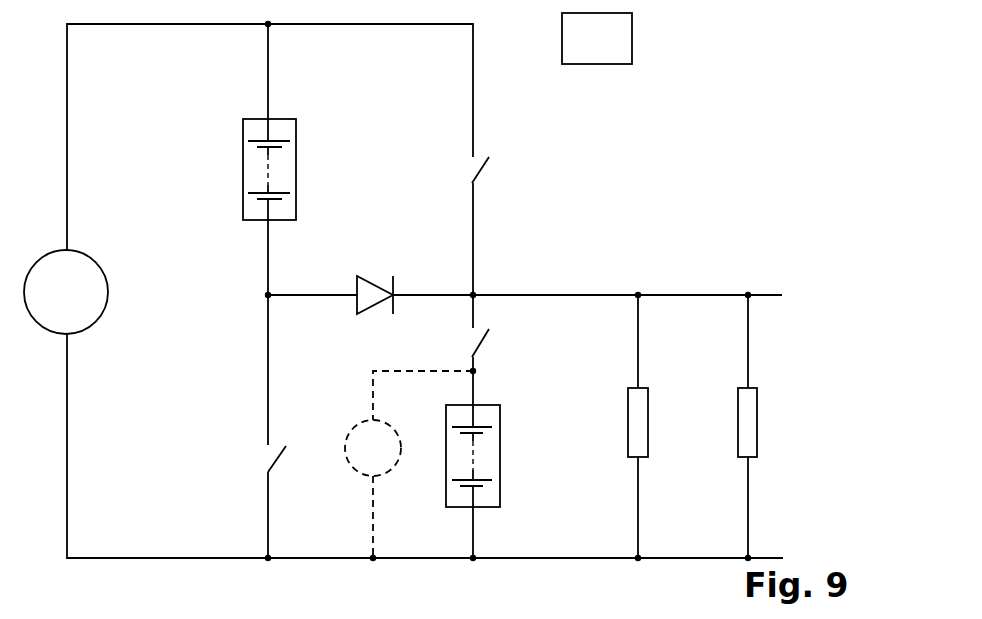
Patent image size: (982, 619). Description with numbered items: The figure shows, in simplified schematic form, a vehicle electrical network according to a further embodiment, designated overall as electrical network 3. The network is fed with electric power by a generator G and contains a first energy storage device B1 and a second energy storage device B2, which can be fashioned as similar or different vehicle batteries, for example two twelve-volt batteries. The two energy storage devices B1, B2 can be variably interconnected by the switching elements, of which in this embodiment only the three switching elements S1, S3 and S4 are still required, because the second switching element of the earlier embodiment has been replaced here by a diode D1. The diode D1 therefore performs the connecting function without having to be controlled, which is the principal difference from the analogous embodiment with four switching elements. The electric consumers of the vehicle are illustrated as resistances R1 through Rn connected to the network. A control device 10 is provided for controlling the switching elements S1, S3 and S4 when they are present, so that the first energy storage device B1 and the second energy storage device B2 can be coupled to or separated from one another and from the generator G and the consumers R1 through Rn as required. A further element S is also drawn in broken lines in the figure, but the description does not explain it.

The electrical network 3 is at (410, 291).
The control device 10 is at (597, 64).
The generator G is at (66, 292).
The first energy storage device B1 is at (290, 169).
The second energy storage device B2 is at (493, 481).
The first switching element S1 is at (495, 225).
The third switching element S3 is at (292, 500).
The fourth switching element S4 is at (496, 350).
The diode D1 is at (375, 277).
The sensor S is at (409, 464).
The resistance R1 is at (656, 426).
The resistance Rn is at (767, 426).